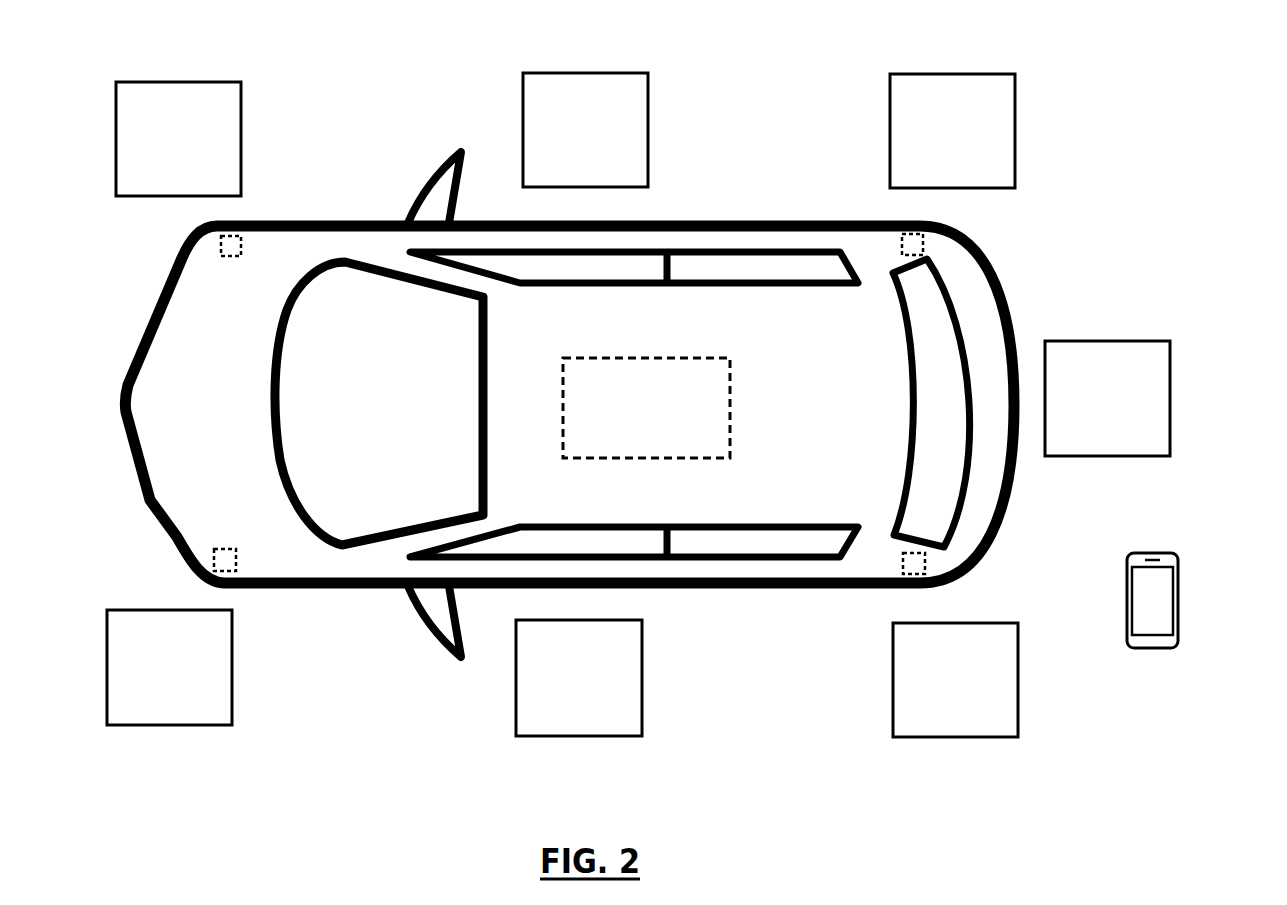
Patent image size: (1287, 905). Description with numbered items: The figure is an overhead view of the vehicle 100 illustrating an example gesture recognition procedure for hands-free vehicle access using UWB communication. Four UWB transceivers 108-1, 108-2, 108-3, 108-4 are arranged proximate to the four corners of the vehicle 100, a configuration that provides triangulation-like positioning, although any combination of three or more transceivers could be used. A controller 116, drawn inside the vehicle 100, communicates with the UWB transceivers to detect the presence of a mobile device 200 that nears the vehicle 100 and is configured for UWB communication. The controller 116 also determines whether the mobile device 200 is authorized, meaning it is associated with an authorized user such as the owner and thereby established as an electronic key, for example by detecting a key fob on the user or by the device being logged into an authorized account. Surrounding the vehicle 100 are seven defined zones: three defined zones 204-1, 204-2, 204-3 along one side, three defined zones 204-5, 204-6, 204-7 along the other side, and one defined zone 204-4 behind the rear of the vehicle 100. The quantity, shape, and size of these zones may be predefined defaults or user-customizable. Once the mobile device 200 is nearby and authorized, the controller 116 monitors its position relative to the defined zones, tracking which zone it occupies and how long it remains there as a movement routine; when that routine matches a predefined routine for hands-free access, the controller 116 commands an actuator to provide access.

The vehicle 100 is at (1136, 80).
The UWB transceiver 108-1 is at (229, 257).
The UWB transceiver 108-2 is at (903, 256).
The UWB transceiver 108-3 is at (224, 548).
The UWB transceiver 108-4 is at (905, 553).
The controller 116 is at (729, 410).
The mobile device 200 is at (1178, 600).
The defined zone 204-1 is at (177, 82).
The defined zone 204-2 is at (586, 73).
The defined zone 204-3 is at (952, 74).
The defined zone 204-4 is at (1171, 398).
The defined zone 204-5 is at (956, 737).
The defined zone 204-6 is at (580, 736).
The defined zone 204-7 is at (170, 725).